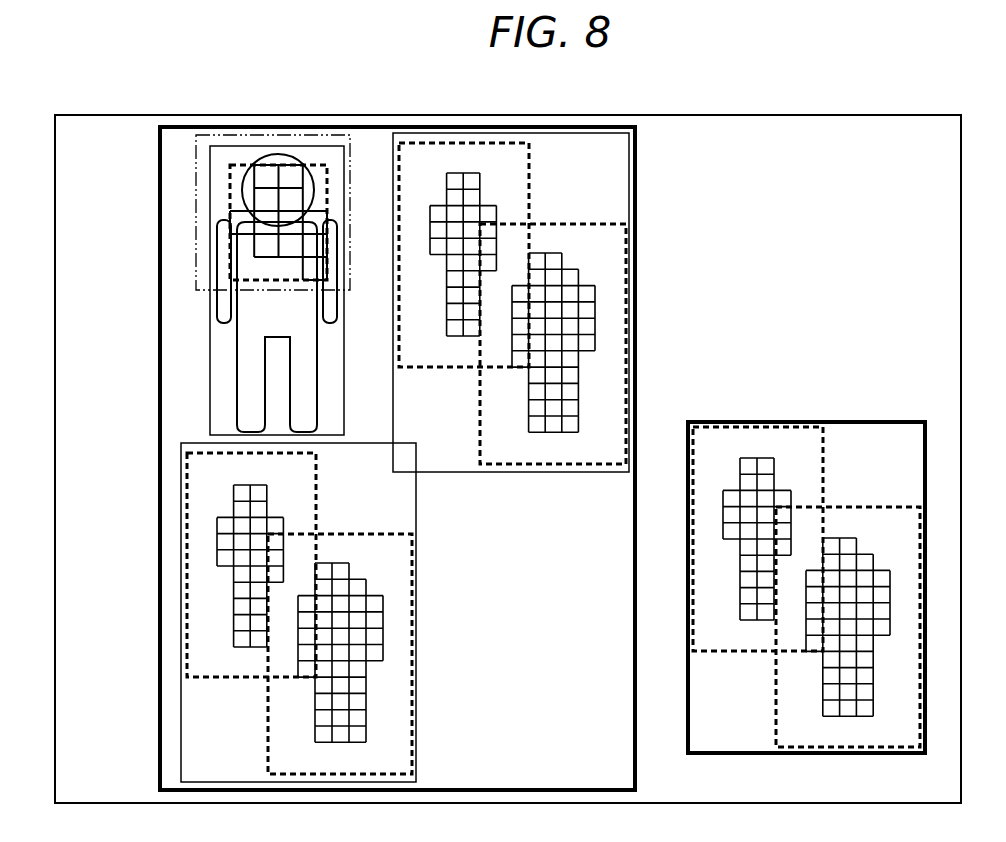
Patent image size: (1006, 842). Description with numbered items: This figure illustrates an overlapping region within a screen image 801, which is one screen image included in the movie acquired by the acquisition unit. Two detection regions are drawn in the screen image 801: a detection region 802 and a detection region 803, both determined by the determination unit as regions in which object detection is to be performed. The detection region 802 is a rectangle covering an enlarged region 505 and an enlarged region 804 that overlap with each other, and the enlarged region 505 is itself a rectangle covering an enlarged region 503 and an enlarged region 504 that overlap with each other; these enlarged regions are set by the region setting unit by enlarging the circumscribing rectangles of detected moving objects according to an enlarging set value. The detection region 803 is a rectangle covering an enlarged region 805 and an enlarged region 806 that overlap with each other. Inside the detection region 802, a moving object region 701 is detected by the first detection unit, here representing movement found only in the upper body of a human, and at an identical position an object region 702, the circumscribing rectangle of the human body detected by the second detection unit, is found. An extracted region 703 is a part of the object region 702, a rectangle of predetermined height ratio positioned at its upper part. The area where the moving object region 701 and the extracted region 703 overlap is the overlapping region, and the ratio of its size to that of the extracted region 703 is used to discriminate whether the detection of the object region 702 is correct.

The screen image 801 is at (428, 115).
The detection region 802 is at (638, 172).
The detection region 803 is at (845, 422).
The enlarged region 804 is at (553, 473).
The enlarged region 805 is at (875, 507).
The enlarged region 806 is at (738, 652).
The enlarged region 503 is at (230, 678).
The enlarged region 504 is at (360, 534).
The enlarged region 505 is at (417, 528).
The moving object region 701 is at (229, 177).
The object region 702 is at (210, 322).
The extracted region 703 is at (196, 226).